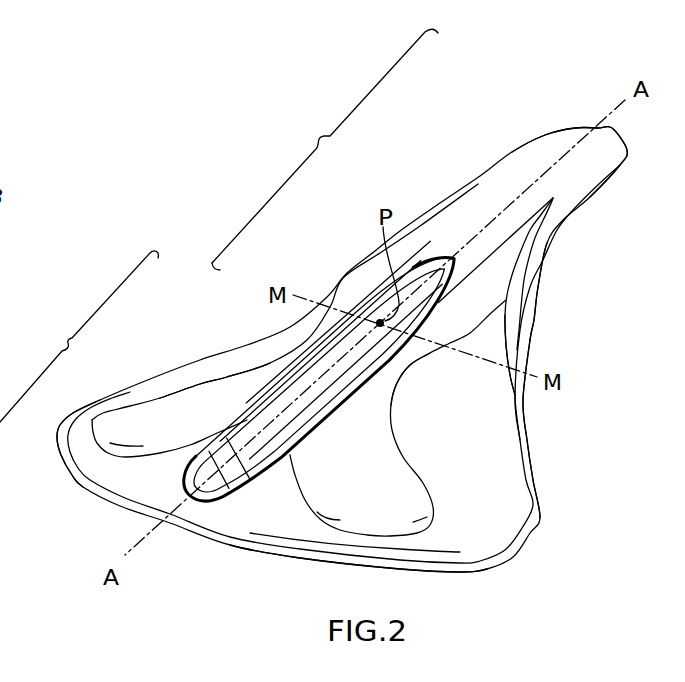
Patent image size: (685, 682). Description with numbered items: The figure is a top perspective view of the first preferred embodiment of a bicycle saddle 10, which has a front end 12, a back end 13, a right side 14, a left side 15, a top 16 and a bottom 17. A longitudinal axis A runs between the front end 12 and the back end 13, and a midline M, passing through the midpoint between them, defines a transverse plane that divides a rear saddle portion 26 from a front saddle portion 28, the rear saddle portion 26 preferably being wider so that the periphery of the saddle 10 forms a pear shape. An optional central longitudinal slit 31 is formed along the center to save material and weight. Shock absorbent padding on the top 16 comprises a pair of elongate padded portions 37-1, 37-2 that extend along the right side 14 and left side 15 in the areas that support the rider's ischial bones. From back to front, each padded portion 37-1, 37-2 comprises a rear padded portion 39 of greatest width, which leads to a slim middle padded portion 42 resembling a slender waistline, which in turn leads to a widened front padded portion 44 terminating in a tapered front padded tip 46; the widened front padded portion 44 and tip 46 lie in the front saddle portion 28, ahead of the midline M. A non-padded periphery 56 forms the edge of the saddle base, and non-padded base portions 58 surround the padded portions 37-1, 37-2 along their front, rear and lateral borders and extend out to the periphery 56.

The bicycle saddle 10 is at (233, 83).
The front end 12 is at (600, 110).
The back end 13 is at (95, 500).
The right side 14 is at (557, 470).
The left side 15 is at (202, 258).
The top 16 is at (490, 393).
The bottom 17 is at (440, 577).
The rear saddle portion 26 is at (79, 336).
The front saddle portion 28 is at (555, 145).
The central longitudinal slit 31 is at (330, 405).
The padded portion 37-1 is at (300, 515).
The padded portion 37-2 is at (90, 443).
The rear padded portion 39 is at (259, 455).
The slim middle padded portion 42 is at (267, 362).
The widened front padded portion 44 is at (345, 276).
The tapered front padded tip 46 is at (480, 177).
The non-padded periphery 56 is at (537, 513).
The non-padded base portions 58 is at (188, 371).